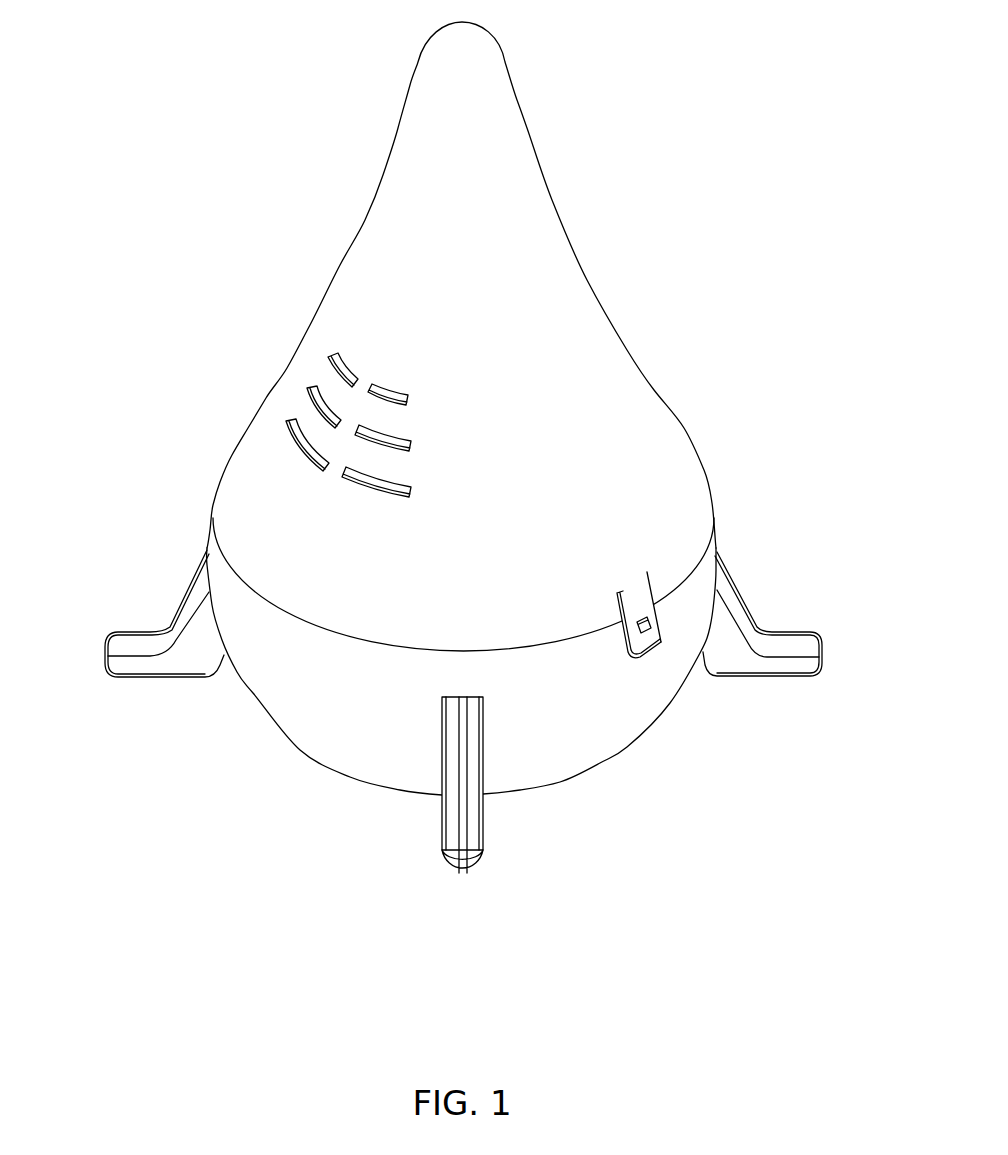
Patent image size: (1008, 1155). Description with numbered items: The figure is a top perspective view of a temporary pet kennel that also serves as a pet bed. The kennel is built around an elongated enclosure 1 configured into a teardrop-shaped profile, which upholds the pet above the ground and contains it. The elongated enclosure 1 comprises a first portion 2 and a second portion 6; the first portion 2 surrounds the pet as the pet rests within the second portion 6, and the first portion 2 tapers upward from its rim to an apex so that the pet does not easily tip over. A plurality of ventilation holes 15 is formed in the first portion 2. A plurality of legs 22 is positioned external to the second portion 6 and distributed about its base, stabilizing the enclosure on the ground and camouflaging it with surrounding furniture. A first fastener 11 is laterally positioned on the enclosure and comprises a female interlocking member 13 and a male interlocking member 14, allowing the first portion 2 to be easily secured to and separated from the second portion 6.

The elongated enclosure 1 is at (464, 470).
The first portion 2 is at (582, 290).
The second portion 6 is at (712, 533).
The first fastener 11 is at (624, 607).
The female interlocking member 13 is at (630, 645).
The male interlocking member 14 is at (656, 592).
The ventilation hole 15 is at (311, 387).
The plurality of legs 22 is at (105, 662).